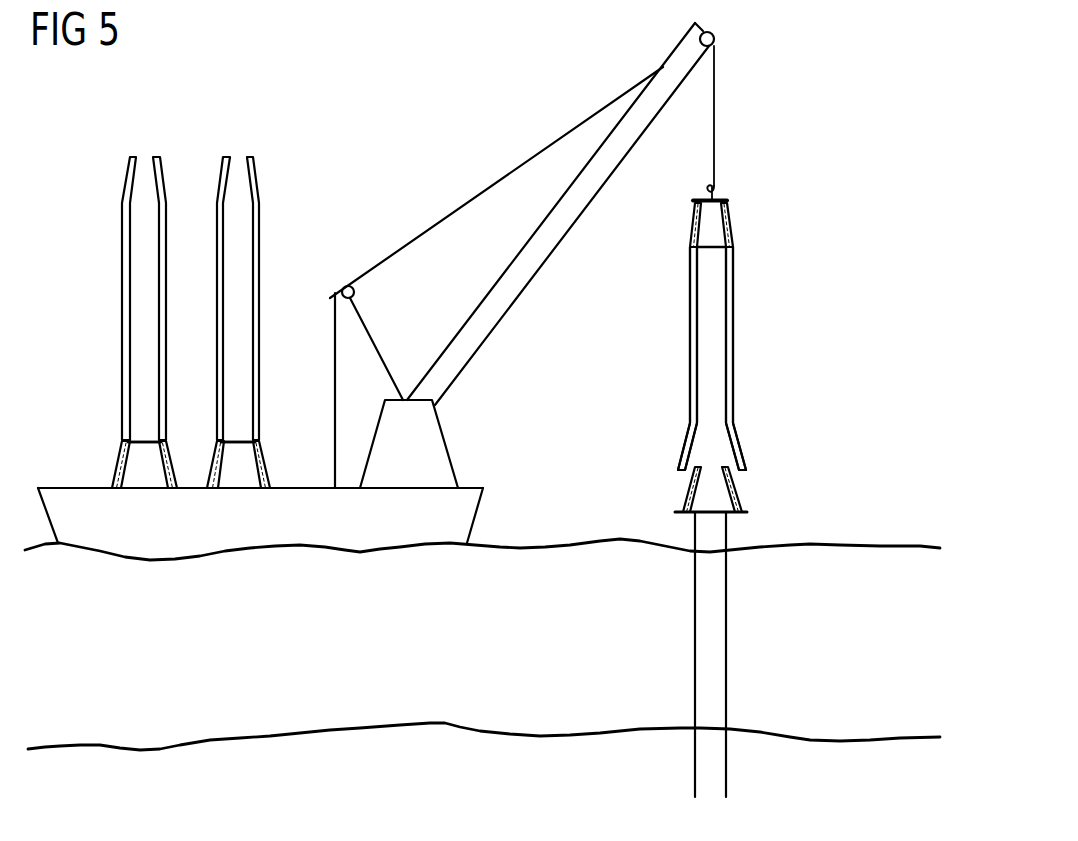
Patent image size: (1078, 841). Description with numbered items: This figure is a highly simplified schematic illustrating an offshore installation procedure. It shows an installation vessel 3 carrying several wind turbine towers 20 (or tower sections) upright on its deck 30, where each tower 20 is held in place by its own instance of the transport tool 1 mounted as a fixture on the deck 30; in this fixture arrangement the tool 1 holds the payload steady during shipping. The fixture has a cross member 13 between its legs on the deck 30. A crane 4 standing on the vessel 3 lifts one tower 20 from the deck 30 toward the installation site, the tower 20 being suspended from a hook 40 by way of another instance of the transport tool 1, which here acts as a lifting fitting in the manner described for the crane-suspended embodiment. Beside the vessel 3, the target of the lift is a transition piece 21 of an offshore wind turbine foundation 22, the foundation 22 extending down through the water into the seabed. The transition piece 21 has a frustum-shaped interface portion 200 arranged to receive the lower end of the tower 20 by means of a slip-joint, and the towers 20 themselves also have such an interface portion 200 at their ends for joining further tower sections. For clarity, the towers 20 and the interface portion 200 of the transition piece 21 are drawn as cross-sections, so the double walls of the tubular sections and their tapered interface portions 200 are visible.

The transport tool 1 is at (142, 475).
The installation vessel 3 is at (63, 461).
The crane 4 is at (547, 313).
The cross member of support 13 is at (217, 473).
The tower section 20 is at (125, 263).
The transition piece 21 is at (715, 537).
The offshore wind turbine foundation 22 is at (717, 657).
The deck 30 is at (289, 484).
The hook 40 is at (716, 191).
The interface portion 200 is at (732, 237).